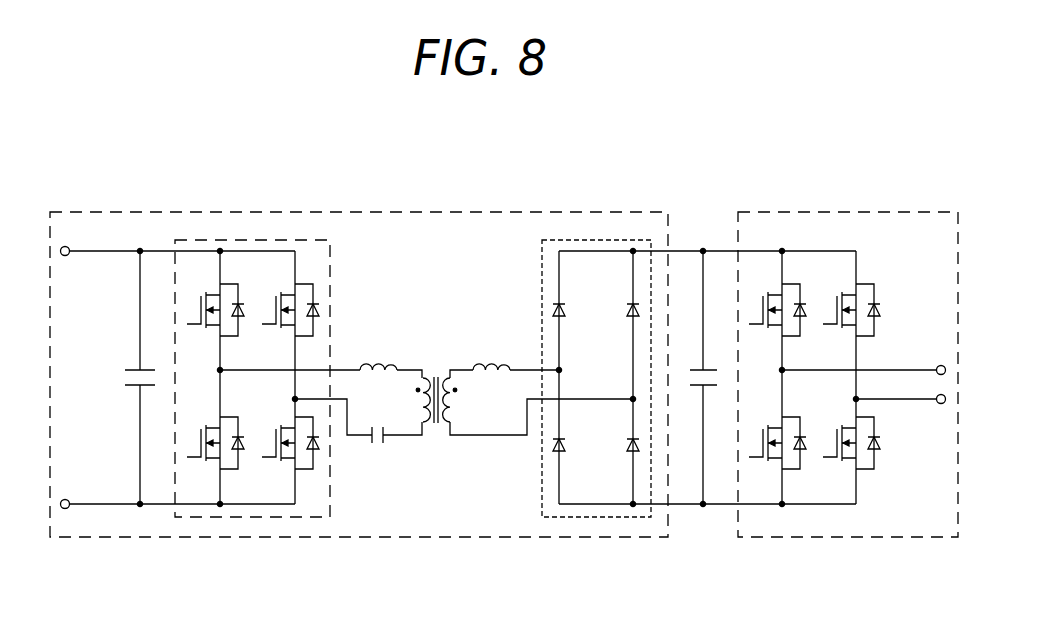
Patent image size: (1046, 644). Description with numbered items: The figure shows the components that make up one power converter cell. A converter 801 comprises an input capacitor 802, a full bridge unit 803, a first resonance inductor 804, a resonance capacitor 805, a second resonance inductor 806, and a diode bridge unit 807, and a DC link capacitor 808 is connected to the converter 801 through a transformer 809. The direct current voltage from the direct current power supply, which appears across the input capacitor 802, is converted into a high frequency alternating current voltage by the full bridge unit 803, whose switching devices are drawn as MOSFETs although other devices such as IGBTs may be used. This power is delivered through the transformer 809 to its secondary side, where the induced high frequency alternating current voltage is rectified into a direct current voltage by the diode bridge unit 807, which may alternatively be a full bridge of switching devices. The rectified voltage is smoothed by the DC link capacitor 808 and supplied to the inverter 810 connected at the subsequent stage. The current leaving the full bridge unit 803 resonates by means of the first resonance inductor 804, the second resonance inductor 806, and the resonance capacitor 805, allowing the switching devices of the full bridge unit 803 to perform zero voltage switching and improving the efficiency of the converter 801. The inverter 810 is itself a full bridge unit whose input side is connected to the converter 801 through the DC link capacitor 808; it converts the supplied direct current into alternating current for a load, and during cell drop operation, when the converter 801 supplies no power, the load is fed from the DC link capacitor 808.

The converter 801 is at (457, 212).
The input capacitor 802 is at (130, 369).
The full bridge unit 803 is at (256, 517).
The first resonance inductor 804 is at (366, 362).
The resonance capacitor 805 is at (377, 445).
The second resonance inductor 806 is at (484, 362).
The diode bridge unit 807 is at (598, 517).
The DC link capacitor 808 is at (712, 365).
The transformer 809 is at (434, 380).
The inverter 810 is at (883, 212).